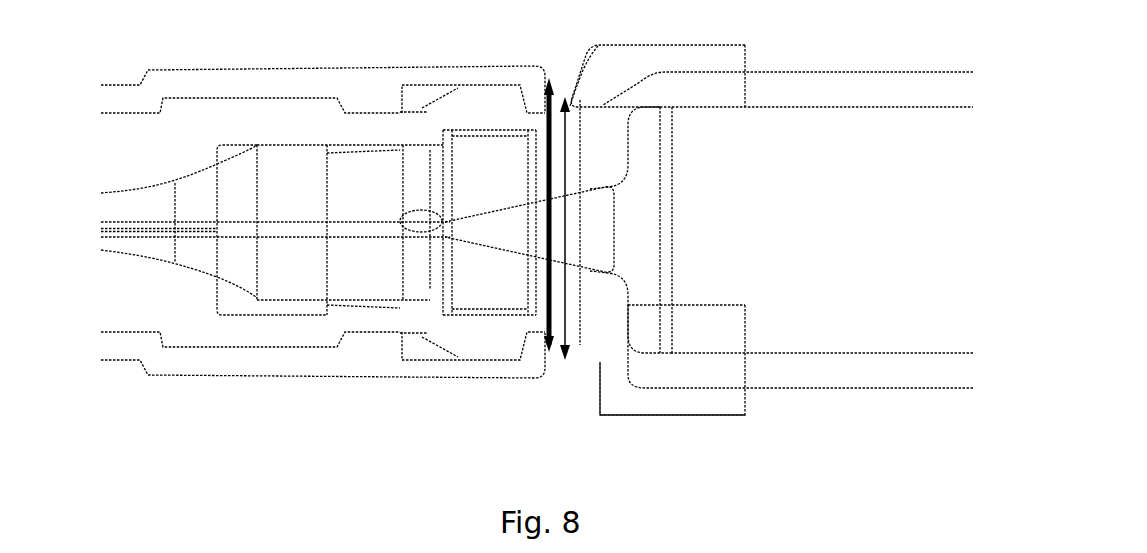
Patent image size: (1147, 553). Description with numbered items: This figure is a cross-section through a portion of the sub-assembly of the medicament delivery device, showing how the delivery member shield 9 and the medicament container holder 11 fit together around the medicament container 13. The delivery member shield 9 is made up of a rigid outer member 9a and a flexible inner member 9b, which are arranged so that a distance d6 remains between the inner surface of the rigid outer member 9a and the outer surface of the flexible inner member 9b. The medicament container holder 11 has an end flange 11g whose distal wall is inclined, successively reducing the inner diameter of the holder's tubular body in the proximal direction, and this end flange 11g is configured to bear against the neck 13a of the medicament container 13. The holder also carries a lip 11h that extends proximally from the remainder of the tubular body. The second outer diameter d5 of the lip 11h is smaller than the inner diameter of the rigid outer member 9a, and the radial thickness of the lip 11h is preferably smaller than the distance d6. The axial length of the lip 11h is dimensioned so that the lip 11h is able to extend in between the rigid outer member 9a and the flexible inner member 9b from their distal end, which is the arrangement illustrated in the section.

The delivery member shield 9 is at (423, 67).
The rigid outer member 9a is at (475, 72).
The flexible inner member 9b is at (543, 108).
The second outer diameter d5 is at (560, 348).
The distance d6 is at (567, 104).
The medicament container holder 11 is at (711, 40).
The lip 11h is at (578, 100).
The end flange 11g is at (622, 95).
The medicament container 13 is at (842, 72).
The neck 13a is at (600, 362).